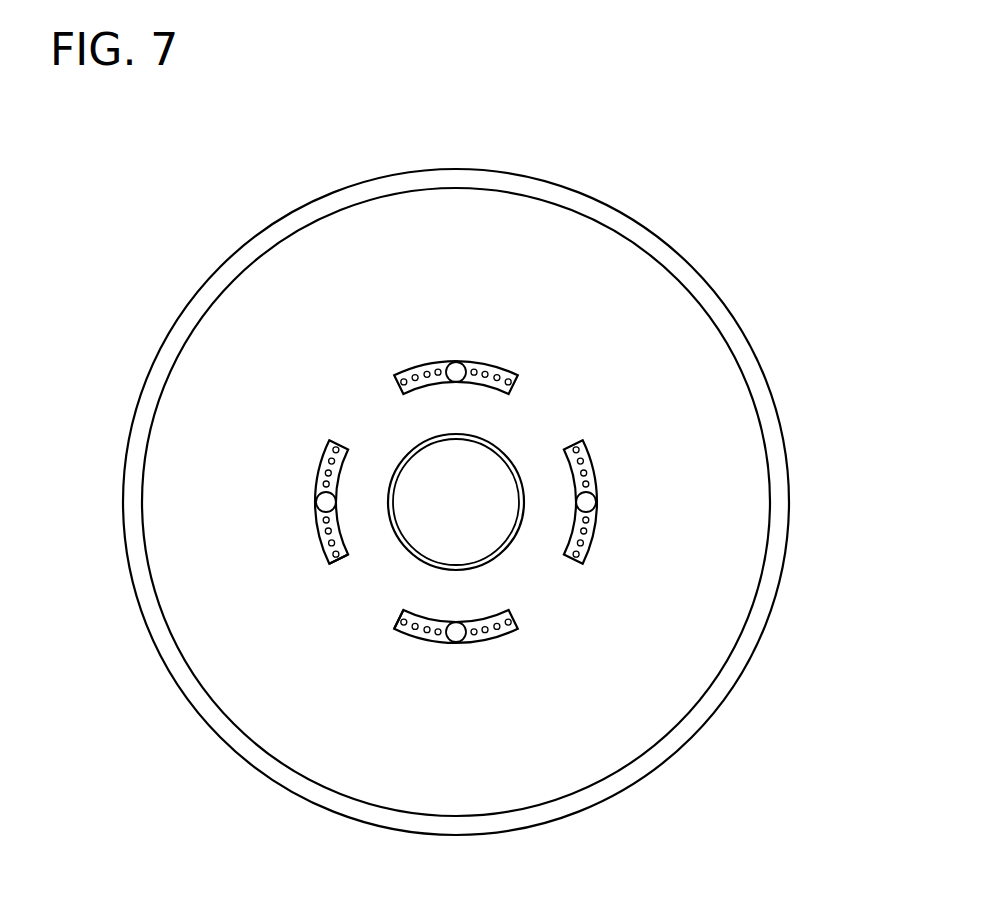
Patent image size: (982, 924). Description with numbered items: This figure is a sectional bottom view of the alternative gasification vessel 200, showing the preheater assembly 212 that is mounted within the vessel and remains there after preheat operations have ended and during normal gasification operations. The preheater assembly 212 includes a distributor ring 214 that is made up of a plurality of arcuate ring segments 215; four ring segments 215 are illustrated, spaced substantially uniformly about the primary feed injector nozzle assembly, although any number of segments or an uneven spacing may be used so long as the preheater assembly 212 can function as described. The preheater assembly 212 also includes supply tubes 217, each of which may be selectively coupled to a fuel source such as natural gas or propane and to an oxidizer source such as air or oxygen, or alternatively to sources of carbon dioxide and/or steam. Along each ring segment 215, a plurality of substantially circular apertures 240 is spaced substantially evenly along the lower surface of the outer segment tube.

The gasification vessel 200 is at (720, 728).
The preheater assembly 212 is at (175, 293).
The distributor ring 214 is at (400, 357).
The ring segments 215 is at (322, 455).
The supply tube 217 is at (465, 367).
The apertures 240 is at (317, 560).